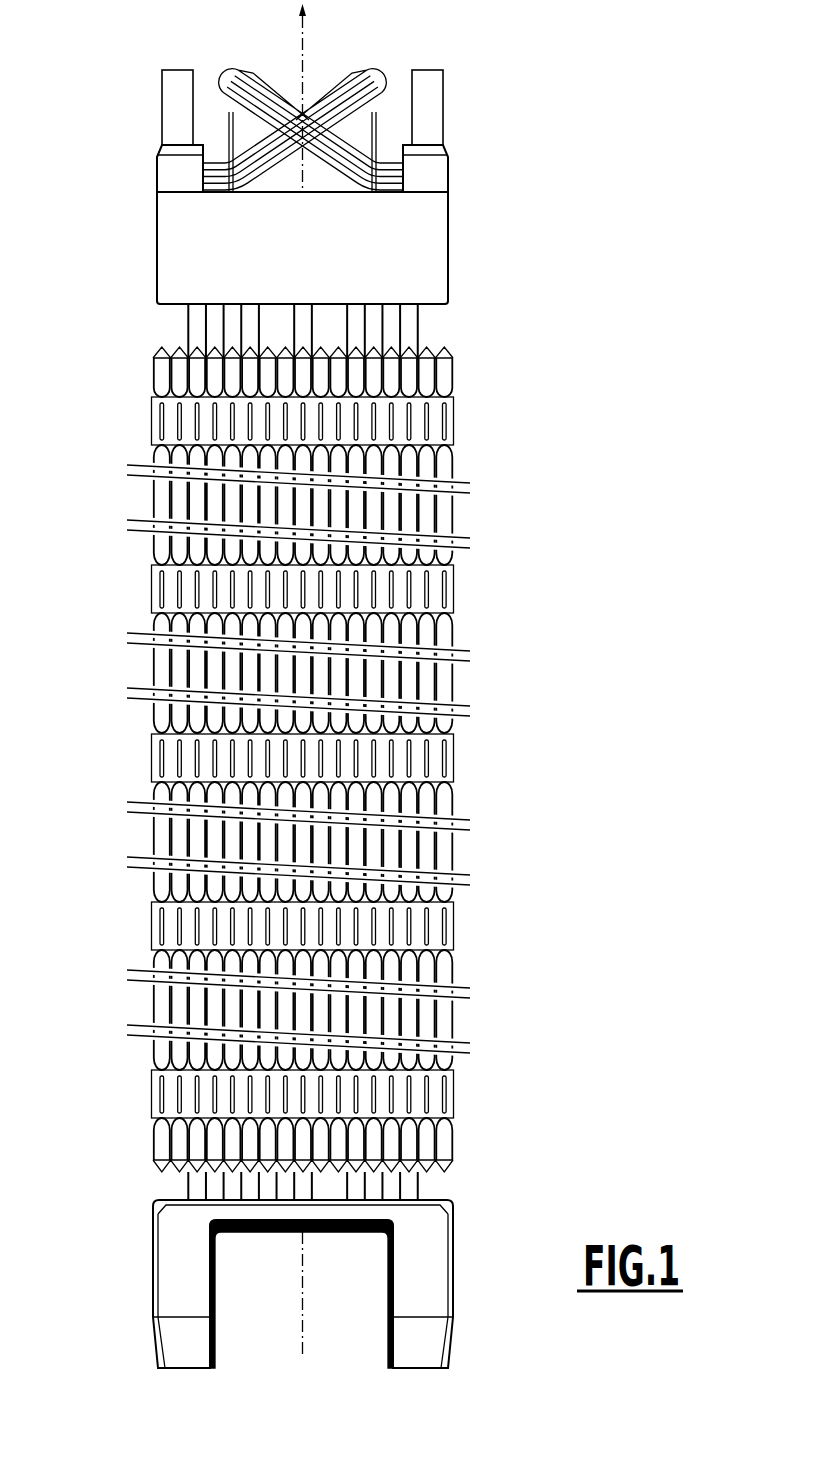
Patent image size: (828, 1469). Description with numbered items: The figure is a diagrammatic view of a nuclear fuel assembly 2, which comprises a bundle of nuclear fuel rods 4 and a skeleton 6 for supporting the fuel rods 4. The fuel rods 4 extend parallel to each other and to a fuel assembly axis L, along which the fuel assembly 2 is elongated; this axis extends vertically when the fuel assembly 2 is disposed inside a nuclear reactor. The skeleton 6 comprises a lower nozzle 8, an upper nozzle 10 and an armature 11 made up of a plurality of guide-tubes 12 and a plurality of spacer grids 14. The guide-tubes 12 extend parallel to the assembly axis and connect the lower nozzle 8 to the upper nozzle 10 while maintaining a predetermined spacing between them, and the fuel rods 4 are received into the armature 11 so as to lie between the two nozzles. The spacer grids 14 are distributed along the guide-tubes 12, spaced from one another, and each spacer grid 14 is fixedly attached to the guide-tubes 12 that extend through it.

The nuclear fuel assembly 2 is at (548, 76).
The nuclear fuel rods 4 is at (427, 327).
The skeleton 6 is at (504, 255).
The lower nozzle 8 is at (153, 1242).
The upper nozzle 10 is at (167, 257).
The armature 11 is at (553, 985).
The guide-tubes 12 is at (222, 322).
The spacer grids 14 is at (447, 595).